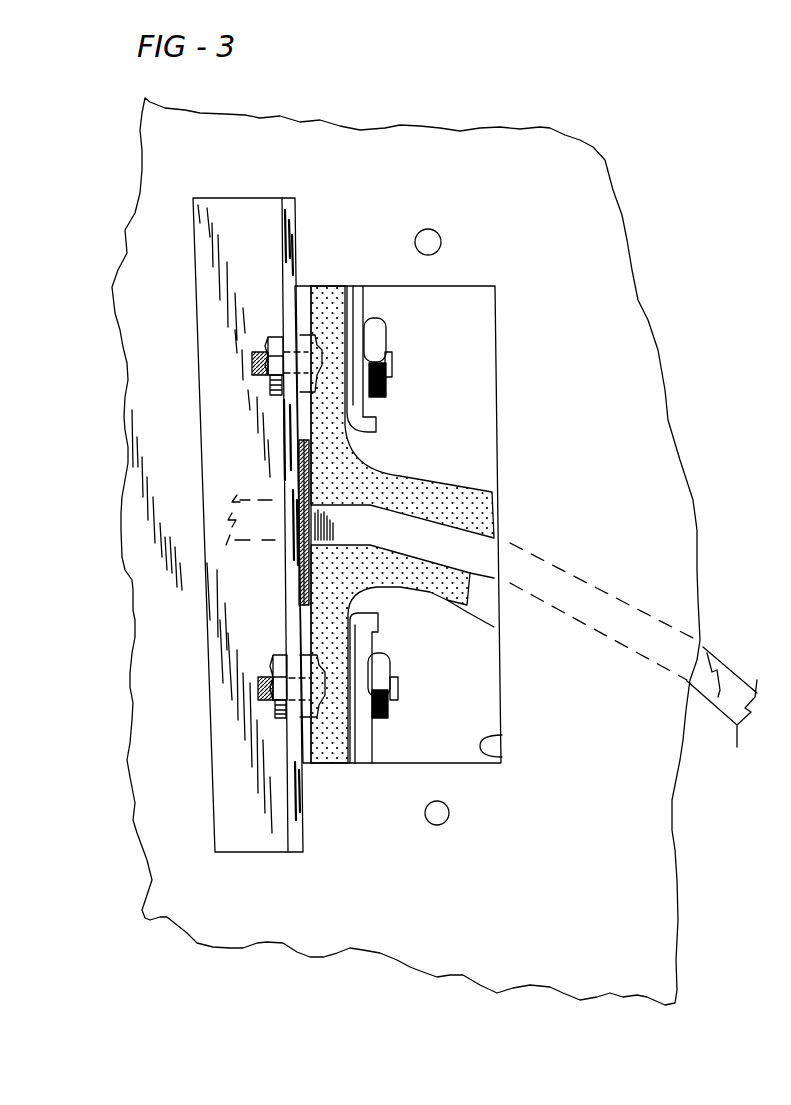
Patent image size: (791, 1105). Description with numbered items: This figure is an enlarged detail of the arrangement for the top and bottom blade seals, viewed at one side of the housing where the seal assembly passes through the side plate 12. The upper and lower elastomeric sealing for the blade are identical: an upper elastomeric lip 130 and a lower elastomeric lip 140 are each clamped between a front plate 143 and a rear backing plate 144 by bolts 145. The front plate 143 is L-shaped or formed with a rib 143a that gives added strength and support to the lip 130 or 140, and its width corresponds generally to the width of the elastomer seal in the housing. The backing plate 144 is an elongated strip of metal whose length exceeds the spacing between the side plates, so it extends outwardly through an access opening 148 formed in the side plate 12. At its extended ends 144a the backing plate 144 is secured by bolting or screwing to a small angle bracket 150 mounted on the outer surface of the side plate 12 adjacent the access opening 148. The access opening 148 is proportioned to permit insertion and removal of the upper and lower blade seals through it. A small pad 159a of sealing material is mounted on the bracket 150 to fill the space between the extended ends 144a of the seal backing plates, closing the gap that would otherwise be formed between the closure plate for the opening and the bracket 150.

The side plate 12 is at (315, 932).
The elastomeric lip 130 is at (410, 490).
The elastomeric lip 140 is at (490, 627).
The front plate 143 is at (350, 317).
The rib 143a is at (378, 418).
The backing plate 144 is at (355, 297).
The extended ends 144a is at (325, 766).
The bolts 145 is at (392, 358).
The access openings 148 is at (502, 758).
The angle bracket 150 is at (227, 832).
The pad of sealing material 159a is at (300, 592).